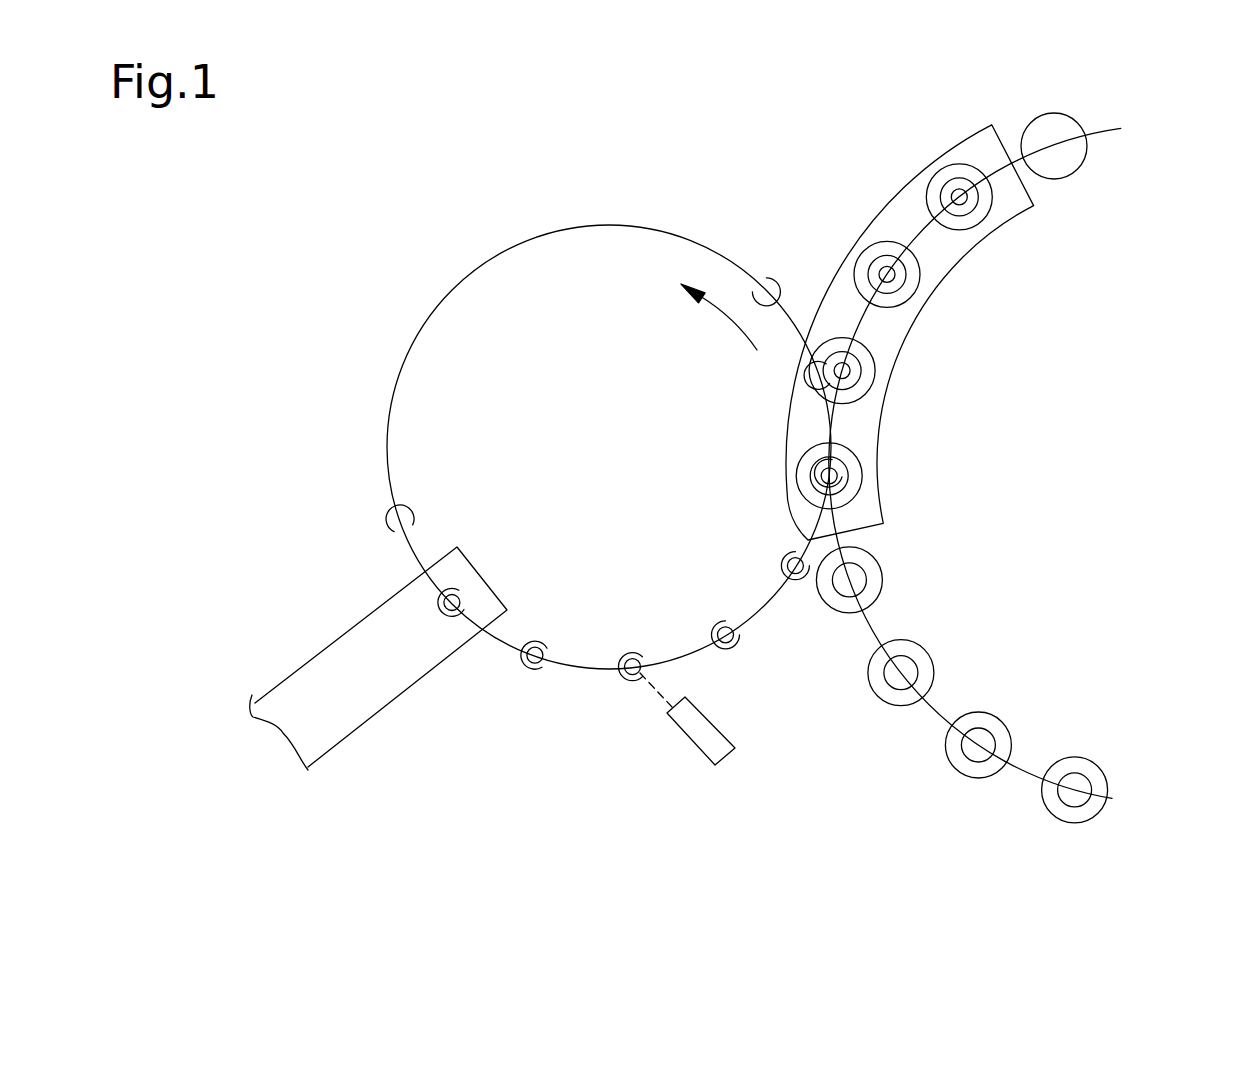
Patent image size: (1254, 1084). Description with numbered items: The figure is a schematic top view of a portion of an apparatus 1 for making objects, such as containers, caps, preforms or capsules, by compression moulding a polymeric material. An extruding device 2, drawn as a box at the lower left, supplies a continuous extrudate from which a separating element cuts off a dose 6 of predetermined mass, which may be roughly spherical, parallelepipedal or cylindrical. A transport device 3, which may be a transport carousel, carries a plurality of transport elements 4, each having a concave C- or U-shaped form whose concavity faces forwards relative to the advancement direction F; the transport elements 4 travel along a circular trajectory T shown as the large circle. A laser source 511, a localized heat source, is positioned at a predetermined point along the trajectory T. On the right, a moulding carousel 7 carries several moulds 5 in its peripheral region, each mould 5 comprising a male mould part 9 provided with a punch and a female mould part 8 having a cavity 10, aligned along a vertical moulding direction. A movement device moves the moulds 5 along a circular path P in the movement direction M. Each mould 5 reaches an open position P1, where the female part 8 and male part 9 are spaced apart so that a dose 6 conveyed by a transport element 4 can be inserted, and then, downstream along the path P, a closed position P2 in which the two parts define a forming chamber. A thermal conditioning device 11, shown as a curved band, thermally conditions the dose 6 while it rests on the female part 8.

The apparatus 1 is at (777, 148).
The extruding device 2 is at (338, 707).
The transport device 3 is at (548, 194).
The transport element 4 is at (388, 518).
The mould 5 is at (1074, 118).
The dose 6 is at (898, 282).
The moulding carousel 7 is at (1090, 515).
The female mould part 8 is at (1070, 823).
The male mould part 9 is at (1045, 128).
The cavity 10 is at (866, 581).
The thermal conditioning device 11 is at (978, 252).
The laser source 511 is at (726, 760).
The trajectory T is at (470, 268).
The advancement direction F is at (719, 320).
The movement direction M is at (1165, 675).
The path P is at (1105, 137).
The open position P1 is at (912, 478).
The closed position P2 is at (1093, 211).